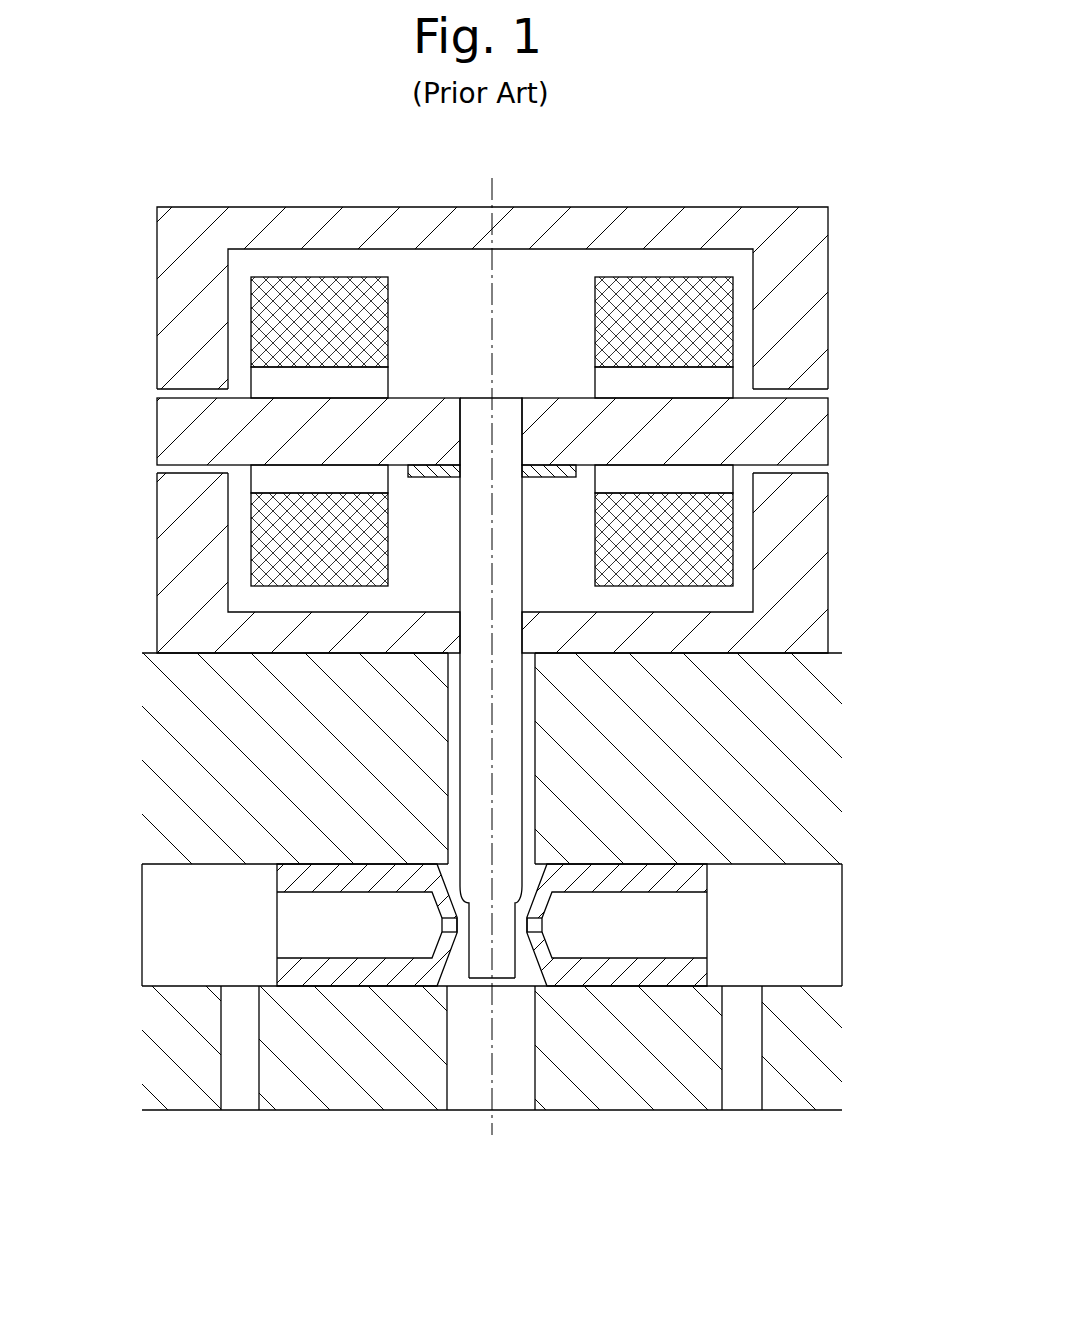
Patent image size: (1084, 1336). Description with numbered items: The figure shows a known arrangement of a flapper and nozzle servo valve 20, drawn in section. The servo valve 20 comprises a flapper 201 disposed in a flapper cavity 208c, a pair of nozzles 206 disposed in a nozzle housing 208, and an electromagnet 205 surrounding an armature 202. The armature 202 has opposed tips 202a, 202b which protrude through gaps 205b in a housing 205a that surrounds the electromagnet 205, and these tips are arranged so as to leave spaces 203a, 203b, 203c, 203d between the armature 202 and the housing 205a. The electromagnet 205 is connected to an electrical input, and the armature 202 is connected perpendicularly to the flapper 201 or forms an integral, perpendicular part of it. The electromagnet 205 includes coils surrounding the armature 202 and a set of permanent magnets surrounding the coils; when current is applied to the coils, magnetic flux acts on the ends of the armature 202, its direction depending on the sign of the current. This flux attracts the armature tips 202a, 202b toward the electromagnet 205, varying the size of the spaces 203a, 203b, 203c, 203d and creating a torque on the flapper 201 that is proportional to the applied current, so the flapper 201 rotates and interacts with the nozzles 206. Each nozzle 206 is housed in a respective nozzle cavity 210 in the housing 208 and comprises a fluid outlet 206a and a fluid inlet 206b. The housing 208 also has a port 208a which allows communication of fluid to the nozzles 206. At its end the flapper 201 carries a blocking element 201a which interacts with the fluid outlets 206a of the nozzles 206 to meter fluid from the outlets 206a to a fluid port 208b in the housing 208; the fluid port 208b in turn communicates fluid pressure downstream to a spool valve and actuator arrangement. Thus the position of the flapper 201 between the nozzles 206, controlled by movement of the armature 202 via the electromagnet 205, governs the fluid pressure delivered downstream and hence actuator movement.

The flapper and nozzle servo valve 20 is at (179, 184).
The flapper 201 is at (508, 410).
The blocking element 201a is at (500, 968).
The armature 202 is at (817, 450).
The armature tip 202a is at (157, 412).
The armature tip 202b is at (828, 418).
The space 203a is at (800, 390).
The space 203b is at (797, 468).
The space 203c is at (187, 392).
The space 203d is at (200, 470).
The electromagnet 205 is at (670, 283).
The housing 205a is at (168, 245).
The gap 205b is at (147, 457).
The nozzle 206 is at (287, 967).
The fluid outlet 206a is at (443, 925).
The fluid inlet 206b is at (288, 907).
The nozzle housing 208 is at (162, 700).
The port 208a is at (240, 1098).
The fluid port 208b is at (465, 1092).
The flapper cavity 208c is at (528, 745).
The nozzle cavity 210 is at (158, 897).